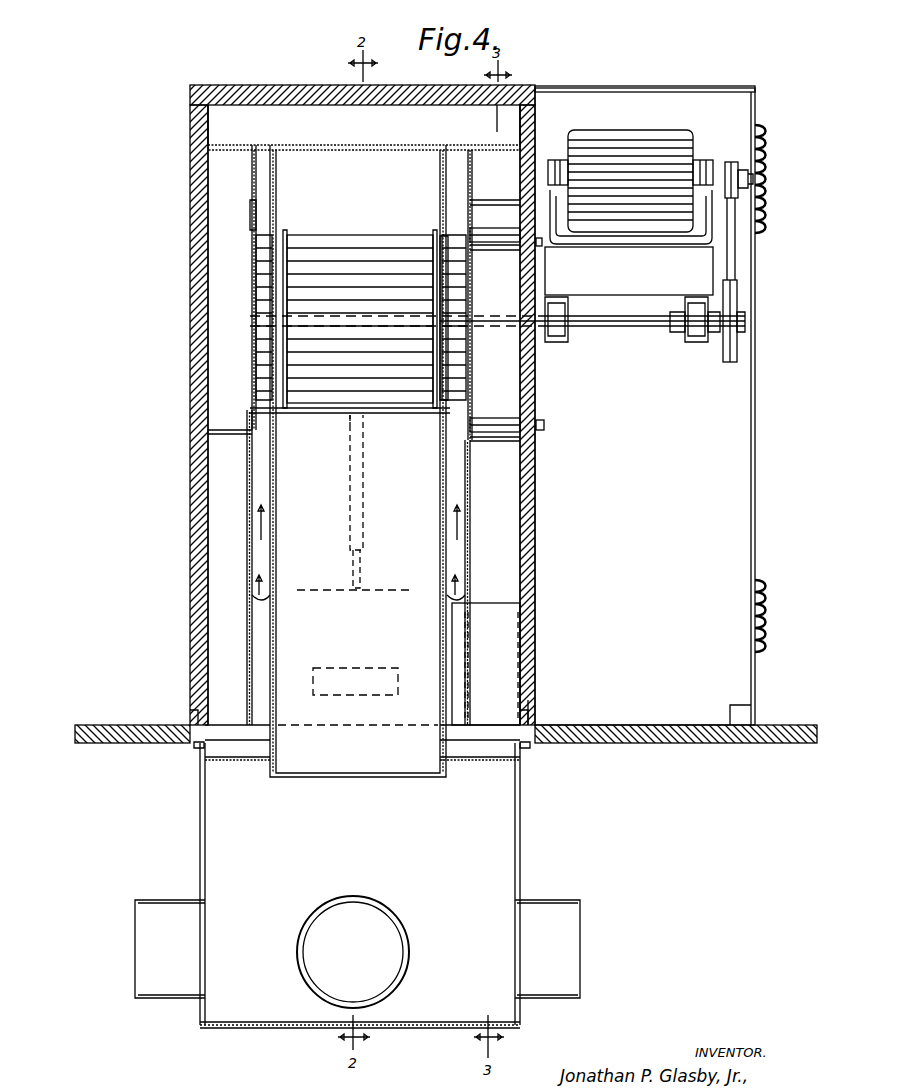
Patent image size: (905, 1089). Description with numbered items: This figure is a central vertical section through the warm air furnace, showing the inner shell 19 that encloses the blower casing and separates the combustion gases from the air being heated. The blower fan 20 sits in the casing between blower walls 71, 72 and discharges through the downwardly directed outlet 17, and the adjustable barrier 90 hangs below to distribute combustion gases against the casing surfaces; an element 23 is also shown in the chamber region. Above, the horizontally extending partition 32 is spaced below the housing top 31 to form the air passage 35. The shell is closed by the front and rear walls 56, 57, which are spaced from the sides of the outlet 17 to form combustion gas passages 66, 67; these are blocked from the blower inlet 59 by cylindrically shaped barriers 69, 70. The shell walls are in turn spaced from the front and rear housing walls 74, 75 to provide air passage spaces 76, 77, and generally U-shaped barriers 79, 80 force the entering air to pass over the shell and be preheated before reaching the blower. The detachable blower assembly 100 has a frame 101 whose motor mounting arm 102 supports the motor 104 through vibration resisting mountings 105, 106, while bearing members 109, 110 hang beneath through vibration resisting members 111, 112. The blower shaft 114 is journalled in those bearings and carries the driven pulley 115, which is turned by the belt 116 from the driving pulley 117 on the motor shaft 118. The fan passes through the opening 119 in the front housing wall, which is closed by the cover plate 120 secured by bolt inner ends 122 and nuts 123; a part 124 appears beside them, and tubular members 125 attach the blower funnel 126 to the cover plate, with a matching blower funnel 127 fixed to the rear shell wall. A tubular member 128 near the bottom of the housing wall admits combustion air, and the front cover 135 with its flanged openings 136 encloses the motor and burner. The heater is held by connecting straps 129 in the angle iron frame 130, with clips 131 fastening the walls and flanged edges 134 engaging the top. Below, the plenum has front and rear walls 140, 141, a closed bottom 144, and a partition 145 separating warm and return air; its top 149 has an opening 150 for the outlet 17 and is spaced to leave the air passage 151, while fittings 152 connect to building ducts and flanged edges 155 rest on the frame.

The downwardly directed outlet 17 is at (416, 769).
The inner shell 19 is at (247, 462).
The blower fan 20 is at (316, 262).
The heating element 23 is at (325, 672).
The housing top 31 is at (456, 100).
The horizontally extending partition 32 is at (416, 145).
The air passage 35 is at (292, 118).
The front wall 56 is at (470, 512).
The rear wall 57 is at (250, 495).
The blower casing inlet 59 is at (241, 356).
The combustion gas passage 66 is at (472, 168).
The combustion gas passage 67 is at (258, 185).
The cylindrically shaped barrier 69 is at (256, 413).
The cylindrically shaped barrier 70 is at (369, 434).
The blower wall 71 is at (278, 448).
The blower wall 72 is at (446, 452).
The front housing wall 74 is at (535, 516).
The rear housing wall 75 is at (200, 518).
The air passage space 76 is at (218, 536).
The air passage space 77 is at (500, 543).
The U-shaped barrier 79 is at (200, 436).
The U-shaped barrier 80 is at (520, 442).
The adjustable barrier 90 is at (371, 503).
The detachable blower assembly 100 is at (644, 339).
The frame 101 is at (700, 270).
The motor mounting arm 102 is at (715, 225).
The motor 104 is at (640, 145).
The vibration resisting mounting 105 is at (556, 160).
The vibration resisting mounting 106 is at (706, 160).
The bearing member 109 is at (557, 342).
The bearing member 110 is at (696, 342).
The vibration resisting member 111 is at (590, 288).
The vibration resisting member 112 is at (685, 300).
The blower shaft 114 is at (660, 327).
The driven pulley 115 is at (737, 355).
The belt 116 is at (737, 295).
The driving pulley 117 is at (732, 162).
The motor shaft 118 is at (755, 178).
The opening 119 is at (527, 377).
The cover plate 120 is at (537, 390).
The bolt inner ends 122 is at (450, 225).
The nuts 123 is at (540, 246).
The roller support 124 is at (478, 205).
The tubular members 125 is at (488, 230).
The blower funnel 126 is at (472, 250).
The blower funnel 127 is at (252, 262).
The tubular member 128 is at (500, 603).
The connecting straps 129 is at (222, 732).
The angle iron frame 130 is at (192, 718).
The clips 131 is at (532, 700).
The flanged edges 134 is at (200, 92).
The front cover 135 is at (757, 462).
The flanged openings 136 is at (768, 160).
The front plenum wall 140 is at (520, 840).
The rear plenum wall 141 is at (200, 848).
The plenum bottom 144 is at (262, 1025).
The partition 145 is at (428, 1012).
The plenum top 149 is at (245, 760).
The opening 150 is at (270, 765).
The air passage 151 is at (228, 748).
The fittings 152 is at (362, 898).
The flanged edges 155 is at (196, 748).